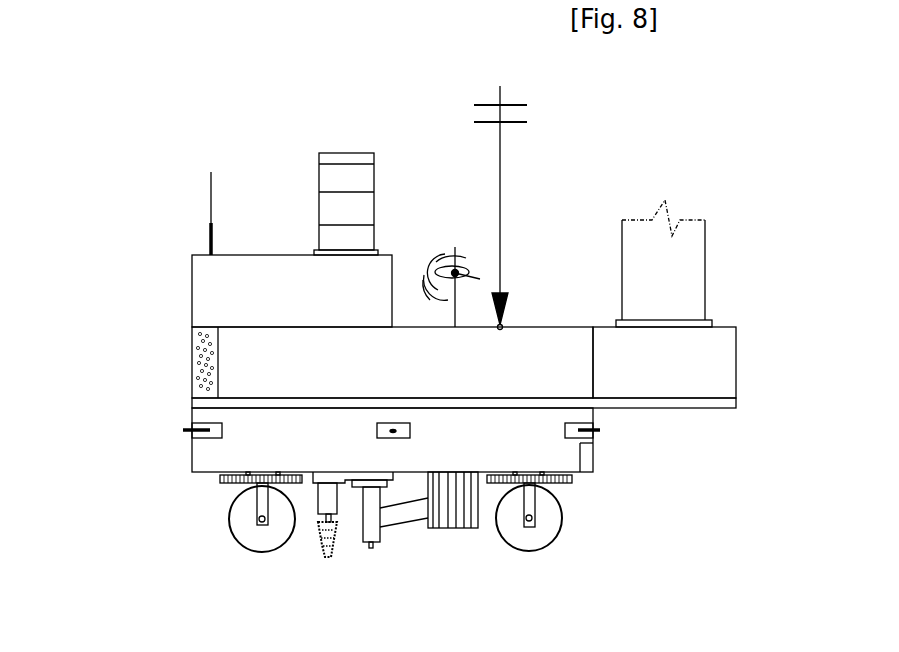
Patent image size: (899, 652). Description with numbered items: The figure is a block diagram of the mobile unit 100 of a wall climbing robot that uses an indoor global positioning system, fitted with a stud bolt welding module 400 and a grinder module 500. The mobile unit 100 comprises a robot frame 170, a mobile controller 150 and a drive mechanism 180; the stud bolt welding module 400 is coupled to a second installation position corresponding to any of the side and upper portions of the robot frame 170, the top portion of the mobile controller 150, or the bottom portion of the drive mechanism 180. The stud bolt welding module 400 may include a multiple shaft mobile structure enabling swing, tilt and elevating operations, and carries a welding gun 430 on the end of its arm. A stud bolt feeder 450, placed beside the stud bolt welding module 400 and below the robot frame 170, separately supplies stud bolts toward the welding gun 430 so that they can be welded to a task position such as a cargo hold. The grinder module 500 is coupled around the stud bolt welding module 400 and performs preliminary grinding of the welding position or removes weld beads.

The mobile unit 100 is at (686, 184).
The mobile controller 150 is at (258, 362).
The robot frame 170 is at (590, 403).
The drive mechanism 180 is at (258, 448).
The stud bolt welding module 400 is at (392, 548).
The welding gun 430 is at (360, 543).
The stud bolt feeder 450 is at (472, 532).
The grinder module 500 is at (308, 545).